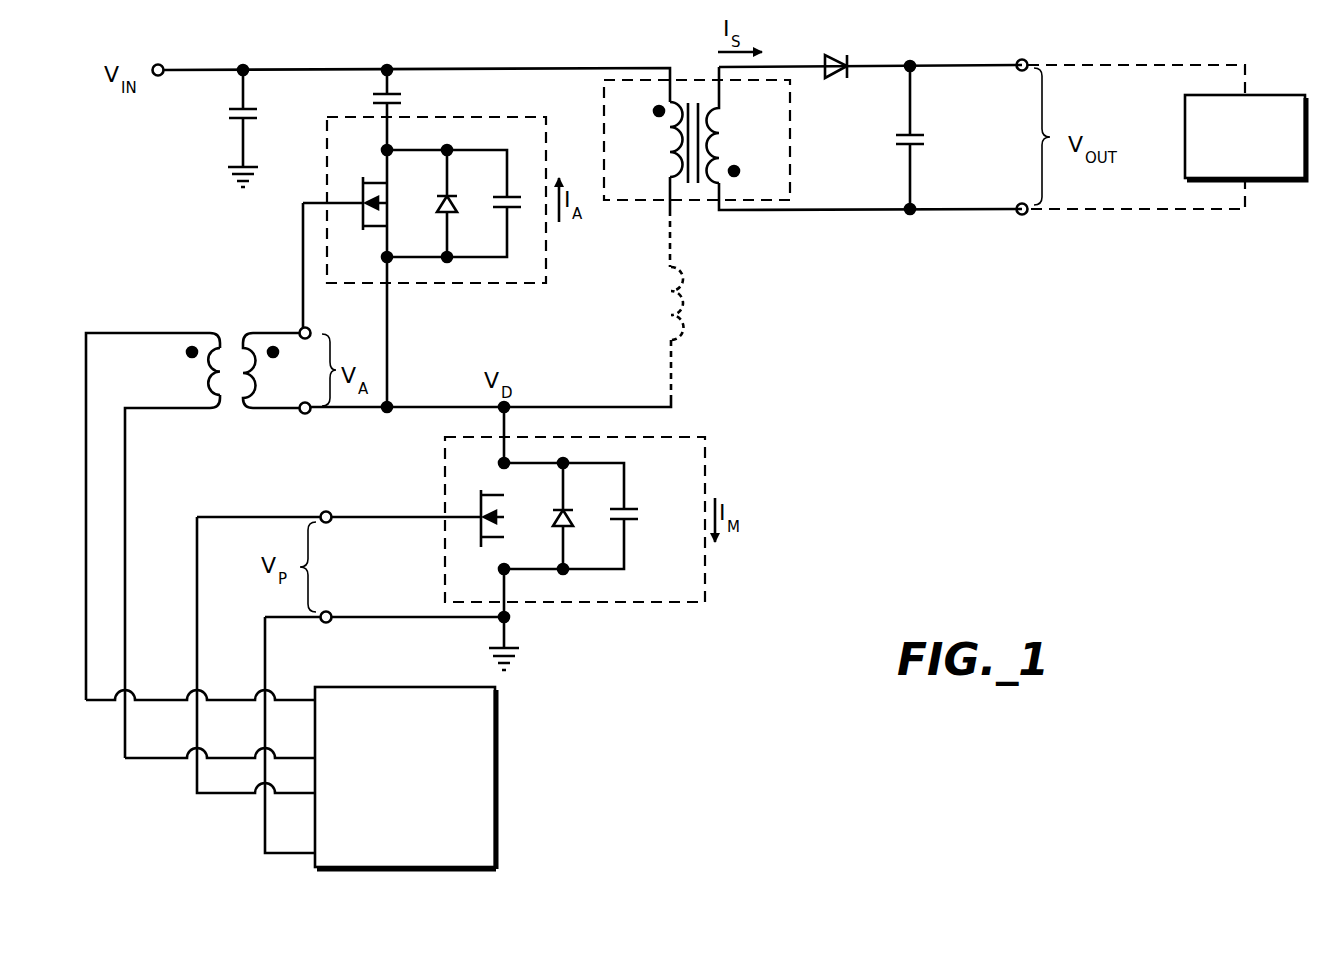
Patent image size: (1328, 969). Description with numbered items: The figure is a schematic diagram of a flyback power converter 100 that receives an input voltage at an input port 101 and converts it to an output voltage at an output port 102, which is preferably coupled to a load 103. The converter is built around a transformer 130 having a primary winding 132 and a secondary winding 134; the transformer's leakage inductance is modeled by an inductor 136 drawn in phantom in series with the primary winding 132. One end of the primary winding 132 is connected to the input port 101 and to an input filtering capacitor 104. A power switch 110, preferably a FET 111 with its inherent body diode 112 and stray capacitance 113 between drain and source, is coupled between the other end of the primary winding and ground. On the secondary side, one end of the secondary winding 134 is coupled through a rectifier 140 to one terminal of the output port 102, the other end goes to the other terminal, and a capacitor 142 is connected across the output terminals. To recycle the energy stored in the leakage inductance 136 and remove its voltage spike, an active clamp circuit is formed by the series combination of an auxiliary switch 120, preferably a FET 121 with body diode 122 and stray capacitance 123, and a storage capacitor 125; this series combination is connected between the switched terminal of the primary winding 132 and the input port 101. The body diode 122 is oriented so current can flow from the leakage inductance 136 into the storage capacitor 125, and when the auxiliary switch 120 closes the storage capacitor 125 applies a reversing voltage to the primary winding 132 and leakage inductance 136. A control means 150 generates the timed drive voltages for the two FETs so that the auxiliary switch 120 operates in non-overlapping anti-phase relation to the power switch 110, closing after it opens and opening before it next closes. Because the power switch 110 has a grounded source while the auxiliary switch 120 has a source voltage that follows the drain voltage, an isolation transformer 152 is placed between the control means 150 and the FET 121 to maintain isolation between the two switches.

The flyback power converter 100 is at (938, 462).
The input port 101 is at (162, 64).
The output port 102 is at (1026, 61).
The load 103 is at (1185, 121).
The input filtering capacitor 104 is at (236, 112).
The power switch 110 is at (620, 516).
The FET 111 is at (479, 500).
The body diode 112 is at (553, 520).
The stray capacitance 113 is at (632, 509).
The auxiliary switch 120 is at (450, 226).
The FET 121 is at (360, 187).
The body diode 122 is at (436, 210).
The stray capacitance 123 is at (509, 194).
The storage capacitor 125 is at (382, 92).
The transformer 130 is at (724, 133).
The primary winding 132 is at (662, 128).
The secondary winding 134 is at (750, 124).
The leakage inductance 136 is at (690, 312).
The rectifier 140 is at (842, 58).
The capacitor 142 is at (916, 135).
The control means 150 is at (497, 803).
The isolation transformer 152 is at (205, 373).